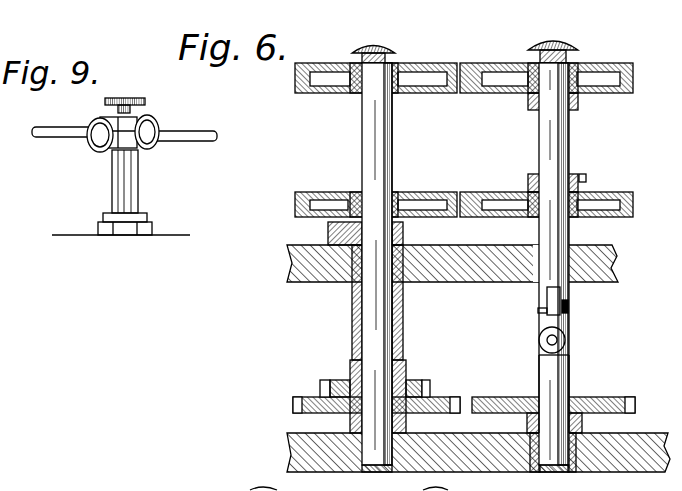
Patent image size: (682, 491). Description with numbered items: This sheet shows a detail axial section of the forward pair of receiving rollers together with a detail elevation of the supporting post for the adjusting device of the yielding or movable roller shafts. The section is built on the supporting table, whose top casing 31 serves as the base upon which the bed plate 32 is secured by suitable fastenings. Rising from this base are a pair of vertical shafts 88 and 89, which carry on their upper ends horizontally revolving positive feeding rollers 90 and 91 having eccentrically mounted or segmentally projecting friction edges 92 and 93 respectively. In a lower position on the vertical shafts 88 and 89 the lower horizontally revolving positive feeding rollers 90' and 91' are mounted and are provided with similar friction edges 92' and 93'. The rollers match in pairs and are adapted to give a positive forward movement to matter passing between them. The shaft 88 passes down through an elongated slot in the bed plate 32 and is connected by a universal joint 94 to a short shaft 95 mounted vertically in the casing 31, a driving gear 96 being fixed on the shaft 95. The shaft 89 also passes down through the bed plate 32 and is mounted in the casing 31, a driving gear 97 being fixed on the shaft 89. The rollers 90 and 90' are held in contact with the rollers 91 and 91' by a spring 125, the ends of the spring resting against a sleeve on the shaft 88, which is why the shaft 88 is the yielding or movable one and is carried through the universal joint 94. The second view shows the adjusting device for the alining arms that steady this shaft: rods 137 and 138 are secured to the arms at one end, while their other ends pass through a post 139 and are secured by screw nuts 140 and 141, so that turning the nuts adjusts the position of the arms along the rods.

In FIG. 6, the top casing 31 is at (291, 451).
In FIG. 6, the bed plate 32 is at (464, 284).
In FIG. 6, the vertical shaft 88 is at (569, 144).
In FIG. 6, the vertical shaft 89 is at (392, 152).
In FIG. 6, the positive feeding roller 90 is at (531, 90).
In FIG. 6, the lower positive feeding roller 90' is at (533, 193).
In FIG. 6, the positive feeding roller 91 is at (392, 93).
In FIG. 6, the lower positive feeding roller 91' is at (399, 193).
In FIG. 6, the friction edge 92 is at (564, 66).
In FIG. 6, the friction edge 92' is at (566, 205).
In FIG. 6, the friction edge 93 is at (359, 93).
In FIG. 6, the friction edge 93' is at (355, 204).
In FIG. 6, the universal joint 94 is at (569, 321).
In FIG. 6, the short shaft 95 is at (571, 368).
In FIG. 6, the driving gear 96 is at (623, 397).
In FIG. 6, the driving gear 97 is at (450, 397).
In FIG. 6, the spring 125 is at (587, 178).
In FIG. 9, the rod 137 is at (60, 129).
In FIG. 9, the rod 138 is at (200, 137).
In FIG. 9, the post 139 is at (112, 200).
In FIG. 9, the screw nut 140 is at (152, 148).
In FIG. 9, the screw nut 141 is at (97, 150).